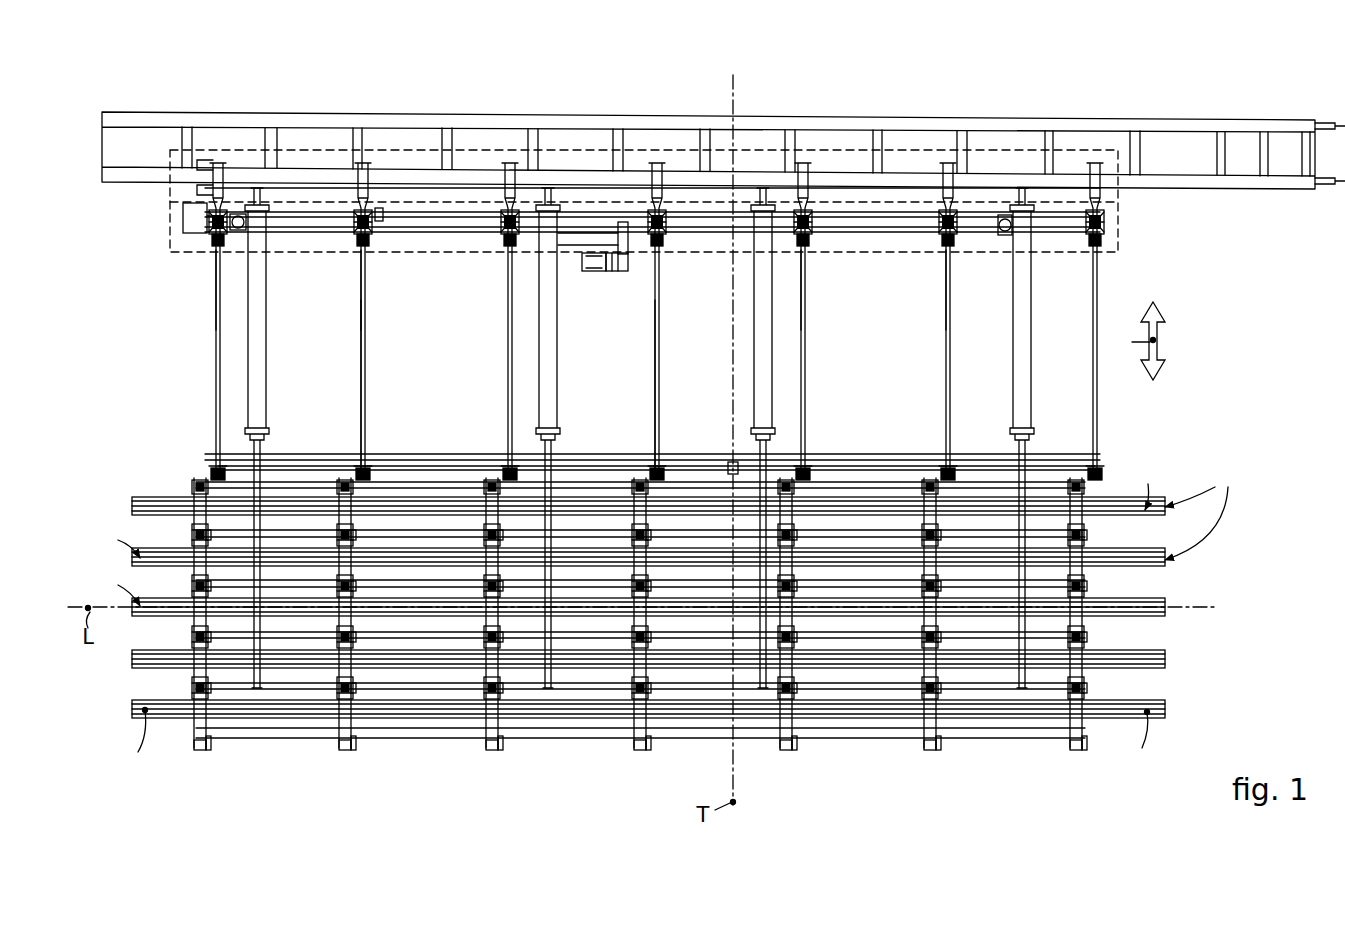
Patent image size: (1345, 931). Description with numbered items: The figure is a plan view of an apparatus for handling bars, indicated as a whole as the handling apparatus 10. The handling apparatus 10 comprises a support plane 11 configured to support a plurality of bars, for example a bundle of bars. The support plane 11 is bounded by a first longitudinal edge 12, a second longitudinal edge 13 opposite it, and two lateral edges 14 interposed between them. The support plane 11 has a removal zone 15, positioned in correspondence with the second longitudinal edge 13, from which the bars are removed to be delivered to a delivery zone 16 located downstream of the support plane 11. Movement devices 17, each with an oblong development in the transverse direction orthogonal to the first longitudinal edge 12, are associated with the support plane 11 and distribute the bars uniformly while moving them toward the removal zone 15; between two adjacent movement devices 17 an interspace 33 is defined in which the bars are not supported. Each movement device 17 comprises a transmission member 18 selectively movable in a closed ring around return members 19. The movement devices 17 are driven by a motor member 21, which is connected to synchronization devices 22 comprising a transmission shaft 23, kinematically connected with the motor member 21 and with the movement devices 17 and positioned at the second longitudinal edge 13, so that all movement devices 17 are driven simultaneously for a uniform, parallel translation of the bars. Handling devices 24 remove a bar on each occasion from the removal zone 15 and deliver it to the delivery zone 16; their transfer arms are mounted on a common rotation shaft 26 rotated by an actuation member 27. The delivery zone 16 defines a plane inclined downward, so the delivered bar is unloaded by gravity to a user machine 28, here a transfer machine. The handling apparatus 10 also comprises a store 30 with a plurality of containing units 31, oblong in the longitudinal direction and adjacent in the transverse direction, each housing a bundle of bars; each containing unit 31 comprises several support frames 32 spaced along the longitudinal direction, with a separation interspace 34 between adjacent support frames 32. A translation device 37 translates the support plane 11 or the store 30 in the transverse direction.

The handling apparatus 10 is at (1247, 685).
The support plane 11 is at (1200, 332).
The first longitudinal edge 12 is at (705, 466).
The second longitudinal edge 13 is at (836, 205).
The lateral edges 14 is at (1100, 282).
The removal zone 15 is at (1120, 232).
The delivery zone 16 is at (1122, 198).
The movement devices 17 is at (215, 402).
The transmission member 18 is at (365, 385).
The return members 19 is at (368, 240).
The motor member 21 is at (612, 275).
The synchronization devices 22 is at (578, 222).
The transmission shaft 23 is at (600, 230).
The handling devices 24 is at (355, 230).
The rotation shaft 26 is at (411, 212).
The actuation member 27 is at (195, 216).
The user machine 28 is at (102, 136).
The store 30 is at (1222, 588).
The containing units 31 is at (1085, 522).
The support frames 32 is at (632, 545).
The interspace 33 is at (220, 265).
The separation interspace 34 is at (210, 750).
The translation device 37 is at (250, 413).